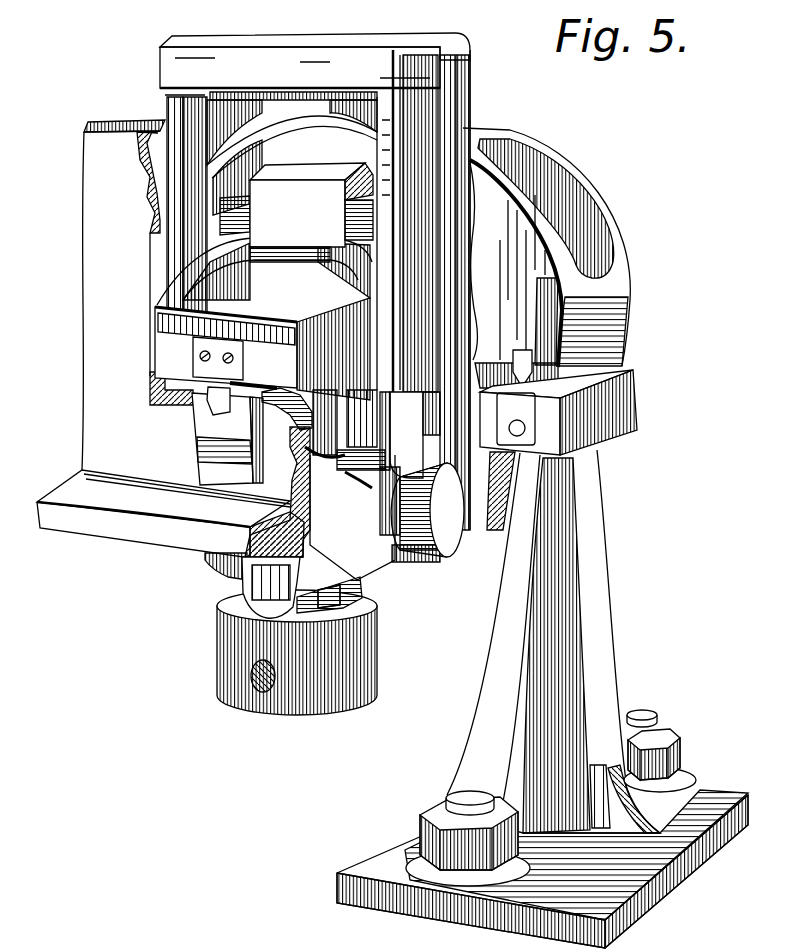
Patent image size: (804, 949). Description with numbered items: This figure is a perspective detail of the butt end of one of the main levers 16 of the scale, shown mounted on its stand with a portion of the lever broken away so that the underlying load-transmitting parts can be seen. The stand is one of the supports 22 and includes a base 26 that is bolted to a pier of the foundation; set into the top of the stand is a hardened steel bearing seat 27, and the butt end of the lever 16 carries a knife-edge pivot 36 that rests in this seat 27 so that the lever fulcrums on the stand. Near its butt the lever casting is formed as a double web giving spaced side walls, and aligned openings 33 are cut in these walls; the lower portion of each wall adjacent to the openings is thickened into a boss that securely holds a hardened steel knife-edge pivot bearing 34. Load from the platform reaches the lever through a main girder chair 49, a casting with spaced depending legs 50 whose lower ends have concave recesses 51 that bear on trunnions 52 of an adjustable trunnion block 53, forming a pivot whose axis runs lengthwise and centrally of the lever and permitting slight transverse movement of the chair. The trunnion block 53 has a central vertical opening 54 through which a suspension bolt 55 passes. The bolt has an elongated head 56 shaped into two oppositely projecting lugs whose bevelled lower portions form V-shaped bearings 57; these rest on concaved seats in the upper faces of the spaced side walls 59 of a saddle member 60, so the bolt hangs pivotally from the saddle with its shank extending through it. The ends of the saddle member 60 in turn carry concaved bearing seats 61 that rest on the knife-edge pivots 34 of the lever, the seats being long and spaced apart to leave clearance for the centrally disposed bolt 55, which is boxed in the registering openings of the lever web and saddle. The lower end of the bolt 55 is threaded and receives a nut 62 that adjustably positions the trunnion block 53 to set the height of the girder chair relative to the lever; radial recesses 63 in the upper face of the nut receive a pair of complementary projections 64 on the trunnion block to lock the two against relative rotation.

The bed 16 is at (82, 415).
The support 22 is at (612, 637).
The base 26 is at (377, 857).
The bearing seat 27 is at (605, 368).
The opening 33 is at (124, 248).
The knife-edge pivot bearing 34 is at (180, 378).
The knife-edge pivot 36 is at (527, 360).
The main girder chair 49 is at (315, 66).
The depending leg 50 is at (195, 173).
The concave recess 51 is at (412, 487).
The trunnion 52 is at (413, 552).
The trunnion block 53 is at (320, 503).
The central vertical opening 54 is at (330, 458).
The suspension bolt 55 is at (365, 592).
The elongated head 56 is at (296, 205).
The V-shaped bearing 57 is at (340, 200).
The side wall 59 is at (250, 262).
The saddle member 60 is at (173, 336).
The concaved bearing seat 61 is at (220, 388).
The nut 62 is at (285, 674).
The radial recess 63 is at (312, 617).
The projection 64 is at (271, 587).